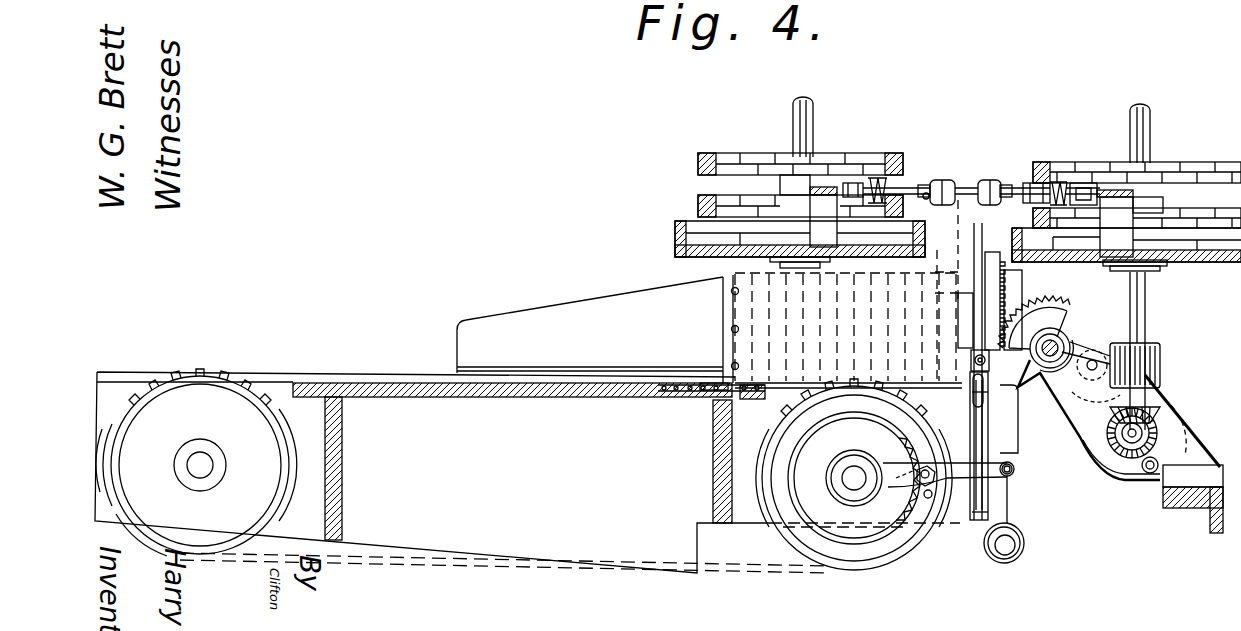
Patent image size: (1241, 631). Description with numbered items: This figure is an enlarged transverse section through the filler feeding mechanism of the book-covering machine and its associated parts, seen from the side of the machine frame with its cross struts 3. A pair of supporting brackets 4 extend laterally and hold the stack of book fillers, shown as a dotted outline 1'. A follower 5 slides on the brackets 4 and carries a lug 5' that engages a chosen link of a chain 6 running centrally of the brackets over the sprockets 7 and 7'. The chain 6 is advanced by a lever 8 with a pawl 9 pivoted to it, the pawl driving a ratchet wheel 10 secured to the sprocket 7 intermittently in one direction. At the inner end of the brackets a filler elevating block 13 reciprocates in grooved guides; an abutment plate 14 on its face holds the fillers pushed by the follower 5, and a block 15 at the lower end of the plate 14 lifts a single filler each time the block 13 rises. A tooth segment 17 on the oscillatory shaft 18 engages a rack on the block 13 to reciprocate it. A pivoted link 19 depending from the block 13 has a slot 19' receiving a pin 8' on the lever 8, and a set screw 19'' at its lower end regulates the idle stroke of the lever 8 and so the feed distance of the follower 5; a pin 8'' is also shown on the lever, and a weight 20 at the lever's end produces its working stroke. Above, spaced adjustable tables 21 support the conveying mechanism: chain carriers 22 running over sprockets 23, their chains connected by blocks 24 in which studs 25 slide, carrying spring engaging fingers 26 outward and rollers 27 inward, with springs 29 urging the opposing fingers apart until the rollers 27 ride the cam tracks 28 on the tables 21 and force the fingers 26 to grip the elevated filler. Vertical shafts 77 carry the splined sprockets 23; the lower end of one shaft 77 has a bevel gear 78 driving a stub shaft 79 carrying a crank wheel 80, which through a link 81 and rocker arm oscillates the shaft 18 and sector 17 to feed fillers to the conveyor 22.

The casing of conveyor 1' is at (848, 330).
The cross struts 3 is at (1185, 502).
The supporting brackets 4 is at (400, 374).
The follower 5 is at (618, 329).
The lug 5' is at (704, 366).
The chain 6 is at (672, 392).
The sprocket 7 is at (854, 495).
The sprocket 7' is at (240, 462).
The lever 8 is at (962, 489).
The pin 8' is at (1025, 479).
The lever pin 8'' is at (967, 363).
The pawl 9 is at (905, 467).
The ratchet wheel 10 is at (888, 532).
The filler elevating block 13 is at (1000, 281).
The abutment plate 14 is at (986, 236).
The block 15 is at (958, 312).
The tooth segment 17 is at (1073, 303).
The oscillatory shaft 18 is at (1068, 334).
The pivoted link 19 is at (1013, 446).
The slot 19' is at (1017, 412).
The set screw 19'' is at (1030, 520).
The weight 20 is at (1005, 565).
The adjustable tables 21 is at (677, 252).
The chain carriers 22 is at (901, 159).
The sprockets 23 is at (745, 158).
The blocks 24 is at (918, 185).
The studs 25 is at (927, 200).
The spring engaging fingers 26 is at (985, 180).
The rollers 27 is at (856, 181).
The cam tracks 28 is at (720, 197).
The springs 29 is at (877, 177).
The vertical shafts 77 is at (823, 104).
The bevel gear 78 is at (1160, 411).
The stub shaft 79 is at (1150, 433).
The crank wheel 80 is at (1125, 483).
The link 81 is at (1102, 400).